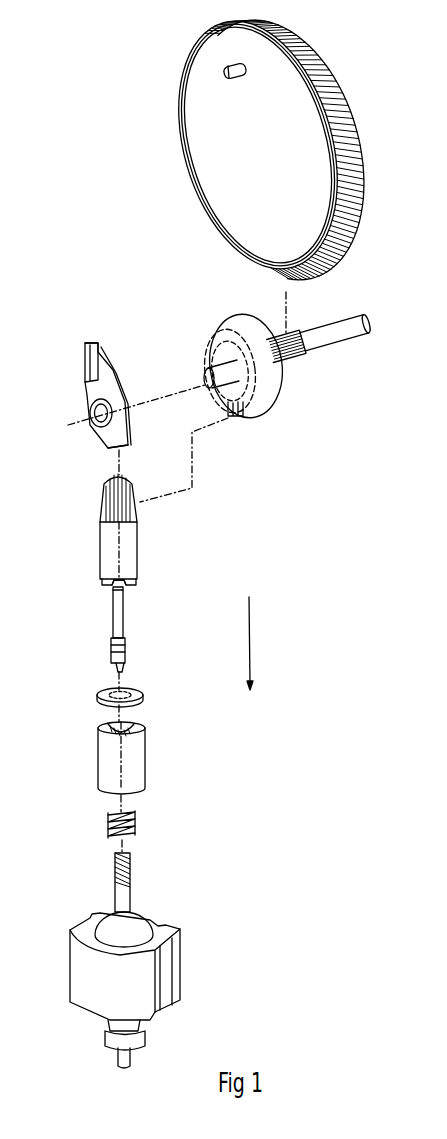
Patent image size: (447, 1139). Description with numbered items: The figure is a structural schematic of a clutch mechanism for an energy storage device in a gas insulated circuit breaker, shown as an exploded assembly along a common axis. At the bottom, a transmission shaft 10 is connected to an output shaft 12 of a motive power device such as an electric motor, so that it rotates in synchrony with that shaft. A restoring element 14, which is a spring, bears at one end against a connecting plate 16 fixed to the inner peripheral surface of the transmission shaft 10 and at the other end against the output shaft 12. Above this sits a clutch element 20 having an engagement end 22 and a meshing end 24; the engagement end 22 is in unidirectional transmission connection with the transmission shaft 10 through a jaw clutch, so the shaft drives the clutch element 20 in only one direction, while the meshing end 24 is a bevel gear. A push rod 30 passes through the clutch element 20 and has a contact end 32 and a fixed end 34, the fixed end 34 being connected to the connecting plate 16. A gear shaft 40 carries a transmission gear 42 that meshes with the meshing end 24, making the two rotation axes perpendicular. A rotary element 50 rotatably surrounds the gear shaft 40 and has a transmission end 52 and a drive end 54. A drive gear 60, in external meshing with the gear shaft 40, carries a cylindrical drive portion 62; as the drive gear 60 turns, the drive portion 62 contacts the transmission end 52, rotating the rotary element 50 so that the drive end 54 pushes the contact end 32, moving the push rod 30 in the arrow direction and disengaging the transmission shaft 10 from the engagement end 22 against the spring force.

The transmission shaft 10 is at (91, 768).
The output shaft 12 is at (130, 897).
The restoring element 14 is at (108, 816).
The connecting plate 16 is at (98, 697).
The clutch element 20 is at (93, 536).
The engagement end 22 is at (126, 562).
The meshing end 24 is at (100, 512).
The push rod 30 is at (104, 628).
The contact end 32 is at (113, 592).
The fixed end 34 is at (128, 658).
The gear shaft 40 is at (300, 385).
The transmission gear 42 is at (267, 418).
The rotary element 50 is at (84, 400).
The transmission end 52 is at (88, 343).
The drive end 54 is at (122, 445).
The drive gear 60 is at (166, 196).
The drive portion 62 is at (222, 72).